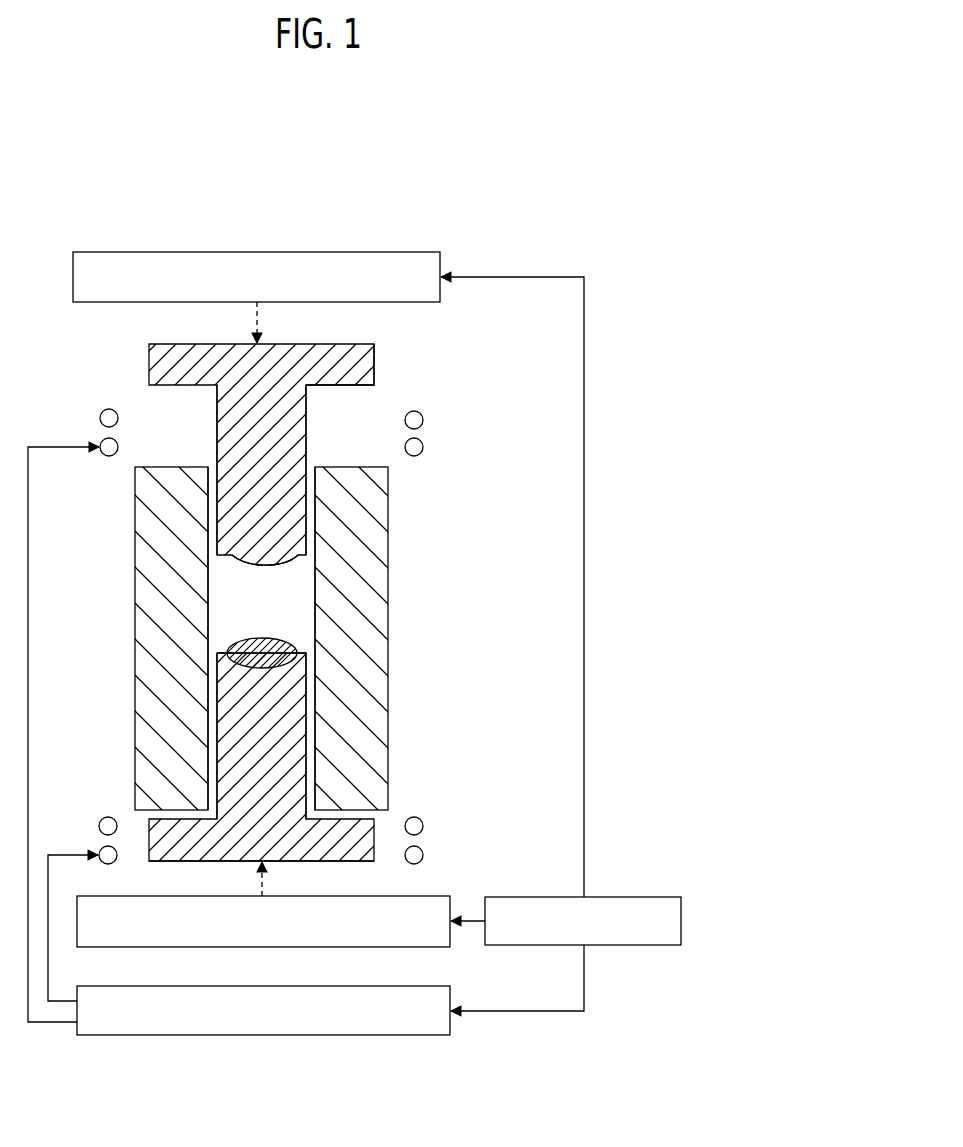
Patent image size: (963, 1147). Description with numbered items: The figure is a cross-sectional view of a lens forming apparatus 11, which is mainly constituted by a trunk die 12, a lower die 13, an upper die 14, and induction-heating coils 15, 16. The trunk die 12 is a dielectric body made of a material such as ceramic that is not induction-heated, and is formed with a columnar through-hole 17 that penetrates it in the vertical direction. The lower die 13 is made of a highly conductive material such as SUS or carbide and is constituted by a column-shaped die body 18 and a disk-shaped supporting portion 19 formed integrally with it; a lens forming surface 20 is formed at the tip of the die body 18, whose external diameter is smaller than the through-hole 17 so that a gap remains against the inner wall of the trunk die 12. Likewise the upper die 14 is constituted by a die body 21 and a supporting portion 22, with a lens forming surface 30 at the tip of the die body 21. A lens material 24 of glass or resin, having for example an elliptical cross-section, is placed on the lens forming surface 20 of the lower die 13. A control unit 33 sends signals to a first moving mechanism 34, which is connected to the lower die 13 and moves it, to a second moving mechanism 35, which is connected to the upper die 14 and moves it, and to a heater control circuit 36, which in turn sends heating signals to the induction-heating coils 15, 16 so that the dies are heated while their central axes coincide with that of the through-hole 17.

The lens forming apparatus 11 is at (463, 249).
The trunk die 12 is at (405, 560).
The lower die 13 is at (385, 858).
The upper die 14 is at (380, 345).
The induction-heating coil 15 is at (99, 826).
The induction-heating coil 16 is at (109, 409).
The through-hole 17 is at (242, 615).
The die body 18 is at (238, 762).
The supporting portion 19 is at (330, 862).
The lens forming surface 20 is at (304, 652).
The die body 21 is at (217, 430).
The supporting portion 22 is at (375, 375).
The lens material 24 is at (262, 642).
The lens forming surface 30 is at (283, 565).
The control unit 33 is at (681, 920).
The first moving mechanism 34 is at (450, 940).
The second moving mechanism 35 is at (441, 290).
The heater control circuit 36 is at (450, 1030).